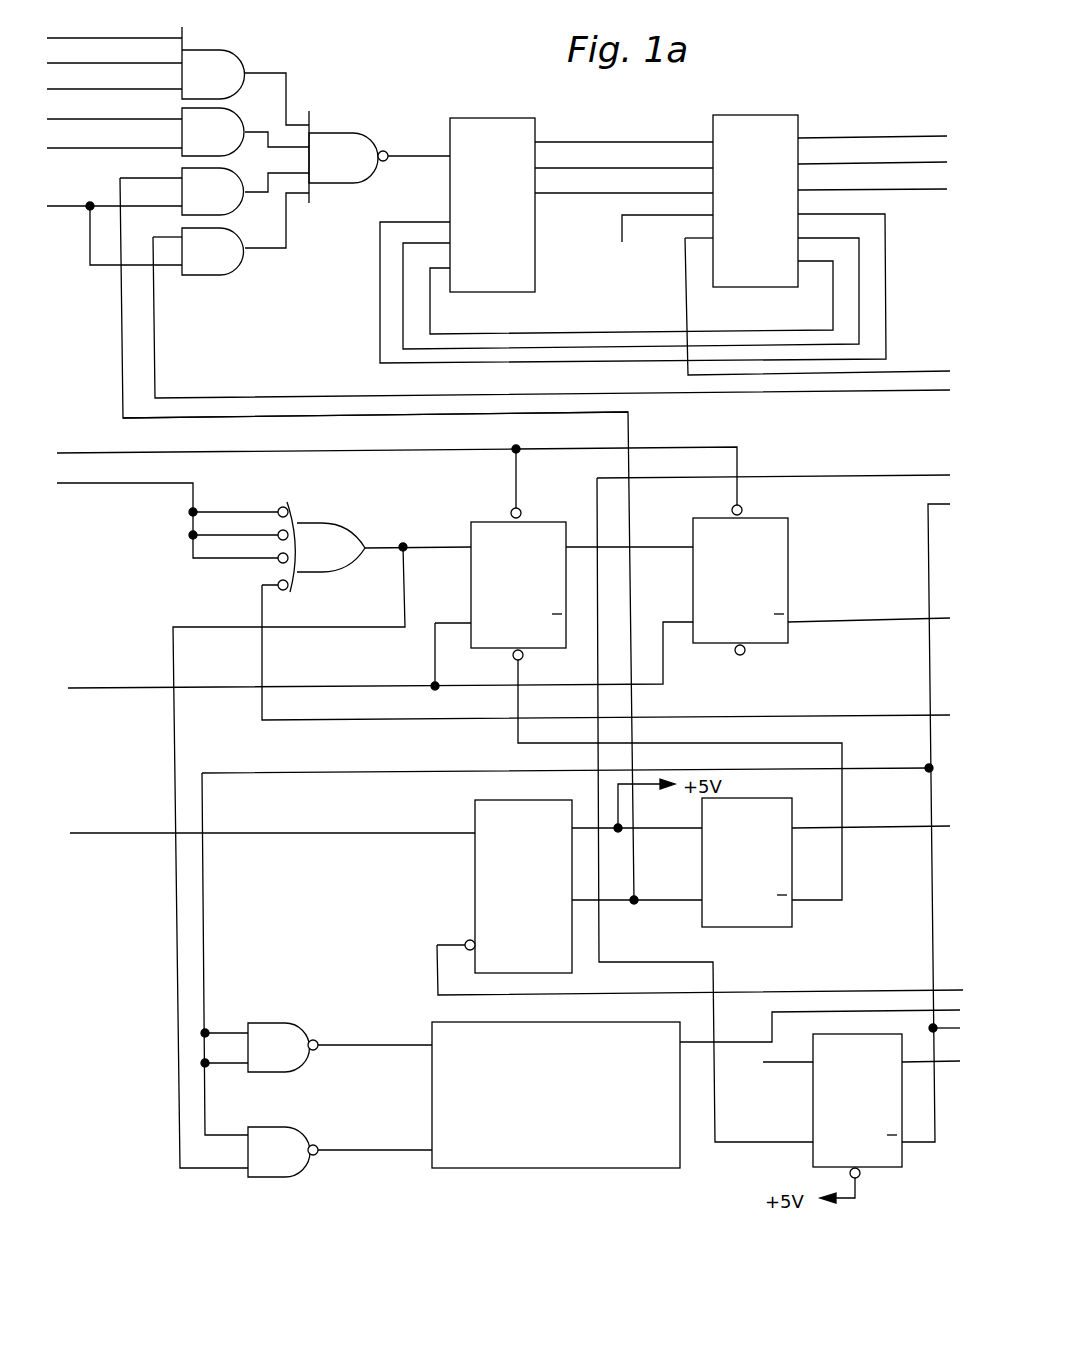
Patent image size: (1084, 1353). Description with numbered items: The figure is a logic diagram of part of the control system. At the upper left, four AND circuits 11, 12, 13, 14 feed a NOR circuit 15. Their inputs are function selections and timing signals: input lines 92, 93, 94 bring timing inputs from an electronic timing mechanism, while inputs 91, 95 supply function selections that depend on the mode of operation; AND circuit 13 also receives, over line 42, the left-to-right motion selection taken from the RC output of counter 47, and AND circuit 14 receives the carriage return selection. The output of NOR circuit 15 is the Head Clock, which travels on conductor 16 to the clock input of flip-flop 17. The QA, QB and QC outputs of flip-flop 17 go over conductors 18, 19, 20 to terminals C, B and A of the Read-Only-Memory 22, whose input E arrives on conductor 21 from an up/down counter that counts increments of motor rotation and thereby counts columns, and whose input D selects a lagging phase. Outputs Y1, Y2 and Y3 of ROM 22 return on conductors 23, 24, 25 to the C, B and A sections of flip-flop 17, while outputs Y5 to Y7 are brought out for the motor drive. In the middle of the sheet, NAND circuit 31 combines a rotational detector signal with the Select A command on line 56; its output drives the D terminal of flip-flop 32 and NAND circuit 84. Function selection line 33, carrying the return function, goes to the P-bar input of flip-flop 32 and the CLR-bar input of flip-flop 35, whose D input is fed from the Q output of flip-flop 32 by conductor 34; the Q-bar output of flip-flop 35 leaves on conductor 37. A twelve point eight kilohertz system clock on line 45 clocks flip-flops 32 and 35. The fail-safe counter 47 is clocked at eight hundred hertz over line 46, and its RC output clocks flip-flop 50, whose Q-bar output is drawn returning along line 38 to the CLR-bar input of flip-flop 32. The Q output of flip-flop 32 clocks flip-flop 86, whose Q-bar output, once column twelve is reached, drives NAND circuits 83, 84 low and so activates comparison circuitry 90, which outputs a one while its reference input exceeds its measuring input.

The AND circuit 11 is at (231, 58).
The AND circuit 12 is at (232, 115).
The AND circuit 13 is at (233, 203).
The AND circuit 14 is at (233, 262).
The NOR circuit 15 is at (335, 135).
The conductor 16 is at (408, 156).
The flip-flop 17 is at (485, 118).
The conductor 18 is at (603, 142).
The conductor 19 is at (633, 168).
The conductor 20 is at (672, 193).
The conductor 21 is at (626, 214).
The Read-Only-Memory (ROM) 22 is at (742, 118).
The conductor 23 is at (758, 330).
The conductor 24 is at (859, 282).
The conductor 25 is at (886, 240).
The NAND circuit 31 is at (322, 520).
The flip-flop 32 is at (538, 528).
The function selection line 33 is at (380, 452).
The conductor 34 is at (657, 548).
The flip-flop 35 is at (783, 568).
The conductor 37 is at (815, 622).
The clear line 38 is at (680, 780).
The line 42 is at (123, 410).
The line 45 is at (378, 686).
The line 46 is at (368, 833).
The counter 47 is at (482, 890).
The flip-flop 50 is at (782, 852).
The line 56 is at (92, 487).
The NAND circuit 83 is at (268, 1022).
The NAND circuit 84 is at (282, 1128).
The flip-flop 86 is at (820, 1095).
The comparison circuitry 90 is at (550, 1162).
The input line 91 is at (112, 38).
The input line 92 is at (130, 63).
The input line 93 is at (155, 89).
The input line 94 is at (122, 119).
The input line 95 is at (118, 148).